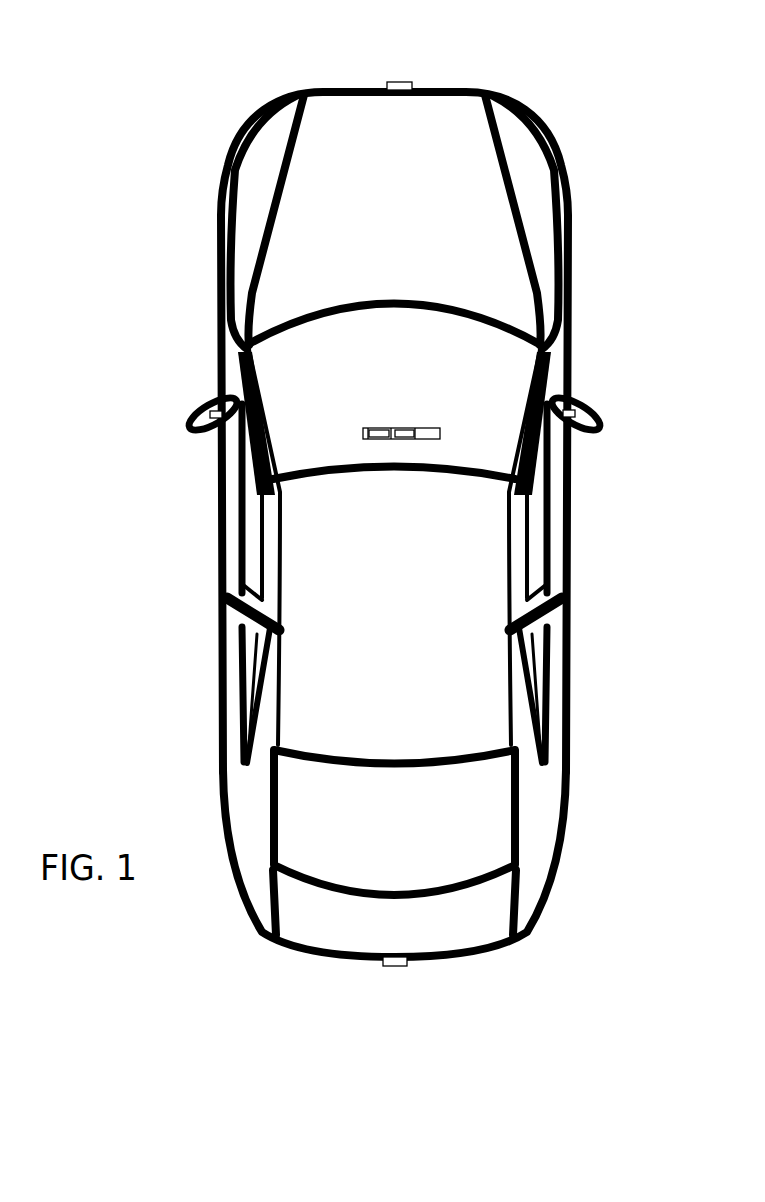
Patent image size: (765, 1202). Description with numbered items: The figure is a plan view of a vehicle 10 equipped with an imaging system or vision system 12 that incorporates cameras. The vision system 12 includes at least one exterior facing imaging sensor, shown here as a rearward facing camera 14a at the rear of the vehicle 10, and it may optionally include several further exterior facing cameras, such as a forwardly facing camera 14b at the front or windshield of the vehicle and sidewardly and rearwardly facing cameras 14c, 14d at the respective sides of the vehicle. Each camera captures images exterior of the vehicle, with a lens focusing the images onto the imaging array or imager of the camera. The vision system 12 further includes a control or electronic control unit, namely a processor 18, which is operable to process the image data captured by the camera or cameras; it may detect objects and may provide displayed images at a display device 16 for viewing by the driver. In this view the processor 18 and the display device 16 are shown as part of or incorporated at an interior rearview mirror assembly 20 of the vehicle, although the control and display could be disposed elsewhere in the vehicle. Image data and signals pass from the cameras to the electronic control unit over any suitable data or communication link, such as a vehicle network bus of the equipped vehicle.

The vehicle 10 is at (168, 168).
The vision system 12 is at (340, 988).
The rearward facing camera 14a is at (396, 963).
The forwardly facing camera 14b is at (403, 81).
The sidewardly/rearwardly facing camera 14c is at (210, 413).
The sidewardly/rearwardly facing camera 14d is at (566, 417).
The display device 16 is at (380, 432).
The processor 18 is at (402, 431).
The interior rearview mirror assembly 20 is at (440, 428).